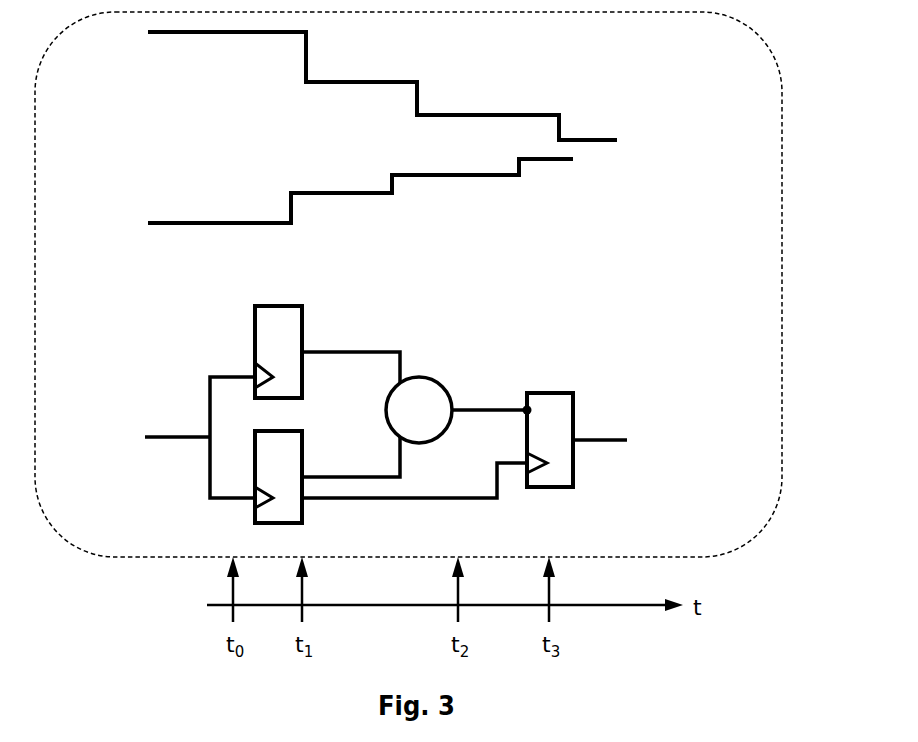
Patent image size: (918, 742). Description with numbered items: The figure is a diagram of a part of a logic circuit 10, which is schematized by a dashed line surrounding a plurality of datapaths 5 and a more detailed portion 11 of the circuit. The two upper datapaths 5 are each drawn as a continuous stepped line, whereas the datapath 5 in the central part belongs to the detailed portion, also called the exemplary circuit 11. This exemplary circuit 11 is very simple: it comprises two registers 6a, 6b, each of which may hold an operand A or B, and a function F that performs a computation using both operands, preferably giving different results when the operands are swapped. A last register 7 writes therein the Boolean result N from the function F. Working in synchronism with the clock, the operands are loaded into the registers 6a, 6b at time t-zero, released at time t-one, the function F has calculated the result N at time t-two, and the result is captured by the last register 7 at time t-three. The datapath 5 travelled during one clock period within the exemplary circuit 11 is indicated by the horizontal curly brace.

The logic circuit 10 is at (760, 44).
The datapaths 5 is at (625, 68).
The exemplary circuit 11 is at (148, 348).
The register 6a is at (255, 334).
The register 6b is at (280, 523).
The last register 7 is at (575, 410).